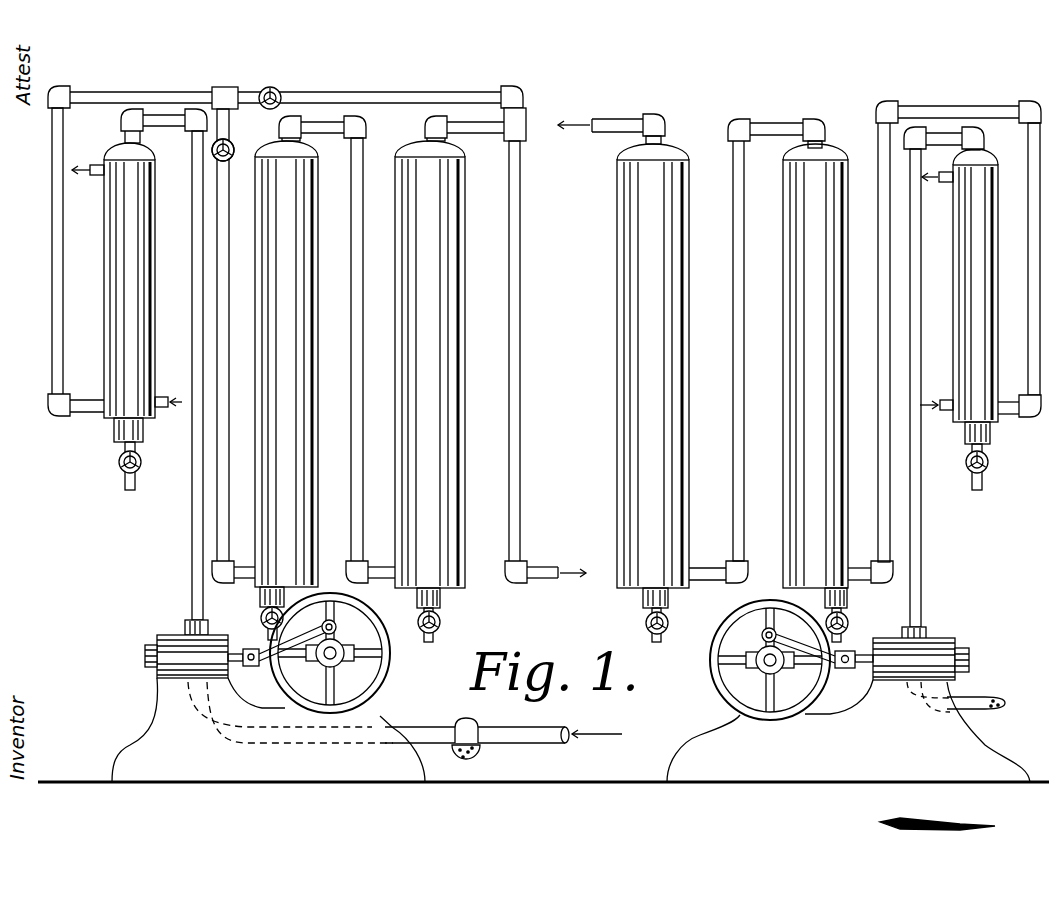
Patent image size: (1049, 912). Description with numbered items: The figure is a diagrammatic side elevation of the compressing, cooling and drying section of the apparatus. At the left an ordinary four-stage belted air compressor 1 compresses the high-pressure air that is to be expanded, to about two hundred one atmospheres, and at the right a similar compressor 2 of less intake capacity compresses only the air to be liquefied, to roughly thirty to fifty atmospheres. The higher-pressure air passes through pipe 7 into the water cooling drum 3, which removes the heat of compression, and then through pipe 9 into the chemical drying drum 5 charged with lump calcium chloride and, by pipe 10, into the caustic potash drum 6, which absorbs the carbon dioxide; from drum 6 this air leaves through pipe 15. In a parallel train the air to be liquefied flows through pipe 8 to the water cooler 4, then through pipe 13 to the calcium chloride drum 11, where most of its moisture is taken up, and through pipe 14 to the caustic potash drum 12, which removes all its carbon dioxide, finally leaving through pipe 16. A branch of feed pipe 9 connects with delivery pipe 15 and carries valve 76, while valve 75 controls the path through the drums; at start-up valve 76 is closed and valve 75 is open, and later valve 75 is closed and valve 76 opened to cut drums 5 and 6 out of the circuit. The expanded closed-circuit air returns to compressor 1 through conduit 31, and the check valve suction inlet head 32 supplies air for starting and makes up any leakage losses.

The air compressor 1 is at (158, 672).
The compressor 2 is at (937, 652).
The water cooling drum 3 is at (120, 300).
The water cooler 4 is at (985, 283).
The chemical drying drum 5 is at (312, 405).
The caustic potash drum 6 is at (447, 320).
The pipe 7 is at (197, 425).
The pipe 8 is at (912, 283).
The high pressure air feed pipe 9 is at (56, 160).
The pipe 10 is at (360, 295).
The calcium chlorid drum 11 is at (792, 337).
The caustic potash drum 12 is at (670, 412).
The pipe 13 is at (885, 410).
The pipe 14 is at (738, 262).
The delivery pipe 15 is at (381, 95).
The pipe 16 is at (620, 125).
The conduit 31 is at (545, 737).
The check valve suction inlet head 32 is at (479, 762).
The valve 75 is at (233, 146).
The valve 76 is at (262, 88).